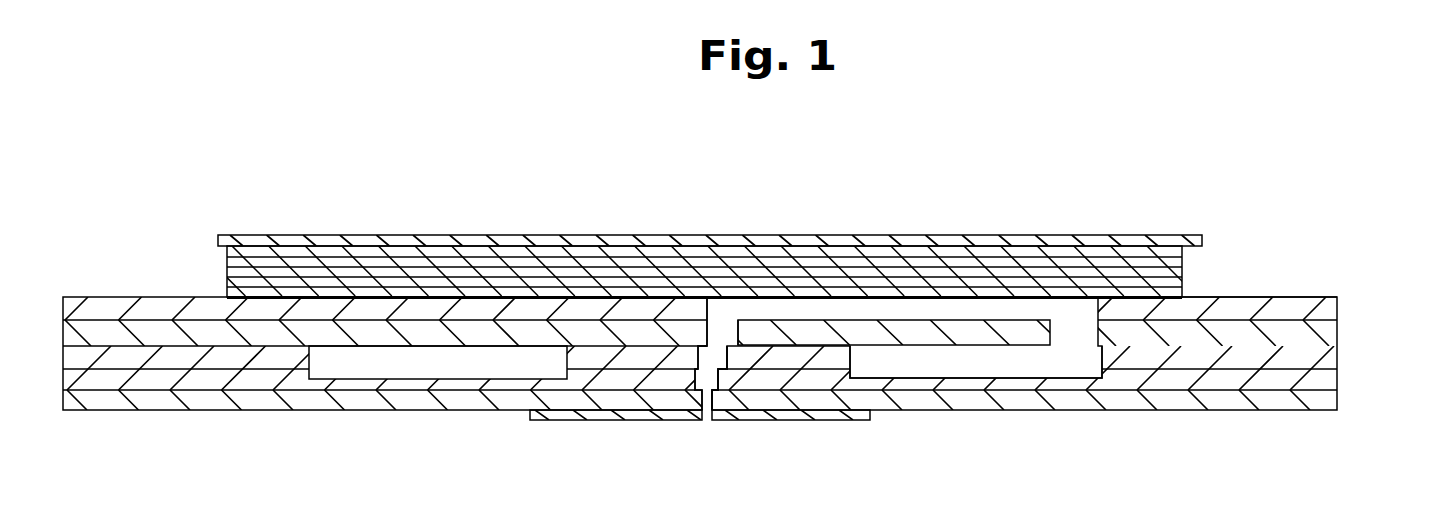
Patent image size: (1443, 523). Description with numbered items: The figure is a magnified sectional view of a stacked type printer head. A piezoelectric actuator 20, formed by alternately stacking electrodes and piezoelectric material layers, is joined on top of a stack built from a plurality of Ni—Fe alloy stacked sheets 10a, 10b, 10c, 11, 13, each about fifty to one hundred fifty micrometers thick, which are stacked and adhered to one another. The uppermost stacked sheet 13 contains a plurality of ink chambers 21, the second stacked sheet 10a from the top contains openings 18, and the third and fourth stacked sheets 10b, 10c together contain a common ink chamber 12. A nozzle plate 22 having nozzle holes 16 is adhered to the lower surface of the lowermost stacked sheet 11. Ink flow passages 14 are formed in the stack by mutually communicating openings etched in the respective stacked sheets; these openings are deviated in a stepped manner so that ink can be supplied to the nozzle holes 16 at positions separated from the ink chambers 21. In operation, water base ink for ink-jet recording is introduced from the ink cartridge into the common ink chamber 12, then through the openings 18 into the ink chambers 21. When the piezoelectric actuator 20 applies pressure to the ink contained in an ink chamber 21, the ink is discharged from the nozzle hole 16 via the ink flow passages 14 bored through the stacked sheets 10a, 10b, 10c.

The stacked sheet 10a is at (1337, 333).
The stacked sheet 10b is at (1337, 360).
The stacked sheet 10c is at (1337, 379).
The stacked sheet 11 is at (923, 405).
The common ink chamber 12 is at (325, 360).
The stacked sheet 13 is at (1285, 300).
The ink flow passage 14 is at (715, 392).
The nozzle hole 16 is at (708, 358).
The opening 18 is at (1083, 338).
The piezoelectric actuator 20 is at (1205, 268).
The ink chamber 21 is at (782, 307).
The nozzle plate 22 is at (792, 415).